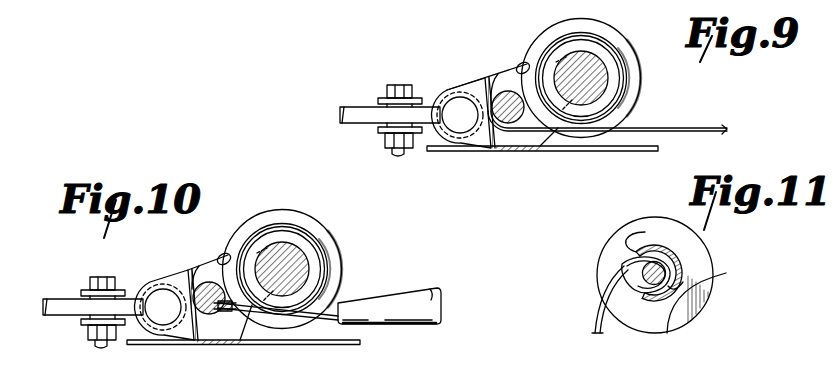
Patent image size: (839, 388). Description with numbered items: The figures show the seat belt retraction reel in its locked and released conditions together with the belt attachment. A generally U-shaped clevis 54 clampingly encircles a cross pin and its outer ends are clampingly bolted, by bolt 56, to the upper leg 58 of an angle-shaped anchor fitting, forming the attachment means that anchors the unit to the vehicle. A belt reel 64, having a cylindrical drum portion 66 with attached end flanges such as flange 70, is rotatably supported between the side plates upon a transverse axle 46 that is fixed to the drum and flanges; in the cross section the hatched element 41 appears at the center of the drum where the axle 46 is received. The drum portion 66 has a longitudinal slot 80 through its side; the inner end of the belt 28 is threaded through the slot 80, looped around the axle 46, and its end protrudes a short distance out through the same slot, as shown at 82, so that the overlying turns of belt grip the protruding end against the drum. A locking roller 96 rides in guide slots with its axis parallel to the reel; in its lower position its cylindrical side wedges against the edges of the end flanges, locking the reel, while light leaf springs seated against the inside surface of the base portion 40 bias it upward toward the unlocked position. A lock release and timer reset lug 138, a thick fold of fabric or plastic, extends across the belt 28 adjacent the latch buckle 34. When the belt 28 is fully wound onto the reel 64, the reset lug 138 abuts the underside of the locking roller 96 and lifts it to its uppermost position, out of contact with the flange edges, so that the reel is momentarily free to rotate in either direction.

In FIG. 9, the belt 28 is at (706, 128).
In FIG. 10, the belt 28 is at (342, 303).
In FIG. 11, the belt 28 is at (596, 331).
In FIG. 10, the latch buckle 34 is at (437, 289).
In FIG. 9, the base portion 40 is at (436, 152).
In FIG. 10, the base portion 40 is at (243, 340).
In FIG. 11, the shaft 41 is at (668, 252).
In FIG. 11, the transverse axle 46 is at (670, 331).
In FIG. 9, the clevis 54 is at (442, 98).
In FIG. 10, the clevis 54 is at (158, 298).
In FIG. 9, the bolt 56 is at (402, 85).
In FIG. 10, the bolt 56 is at (91, 302).
In FIG. 9, the upper leg 58 is at (359, 107).
In FIG. 10, the upper leg 58 is at (79, 295).
In FIG. 11, the belt reel 64 is at (627, 223).
In FIG. 11, the cylindrical drum portion 66 is at (683, 273).
In FIG. 9, the end flange 70 is at (623, 41).
In FIG. 10, the end flange 70 is at (291, 268).
In FIG. 11, the end flange 70 is at (648, 219).
In FIG. 11, the longitudinal slot 80 is at (648, 230).
In FIG. 11, the protruding belt end 82 is at (632, 291).
In FIG. 9, the locking roller 96 is at (522, 66).
In FIG. 10, the locking roller 96 is at (209, 278).
In FIG. 10, the lock release and timer reset lug 138 is at (240, 307).